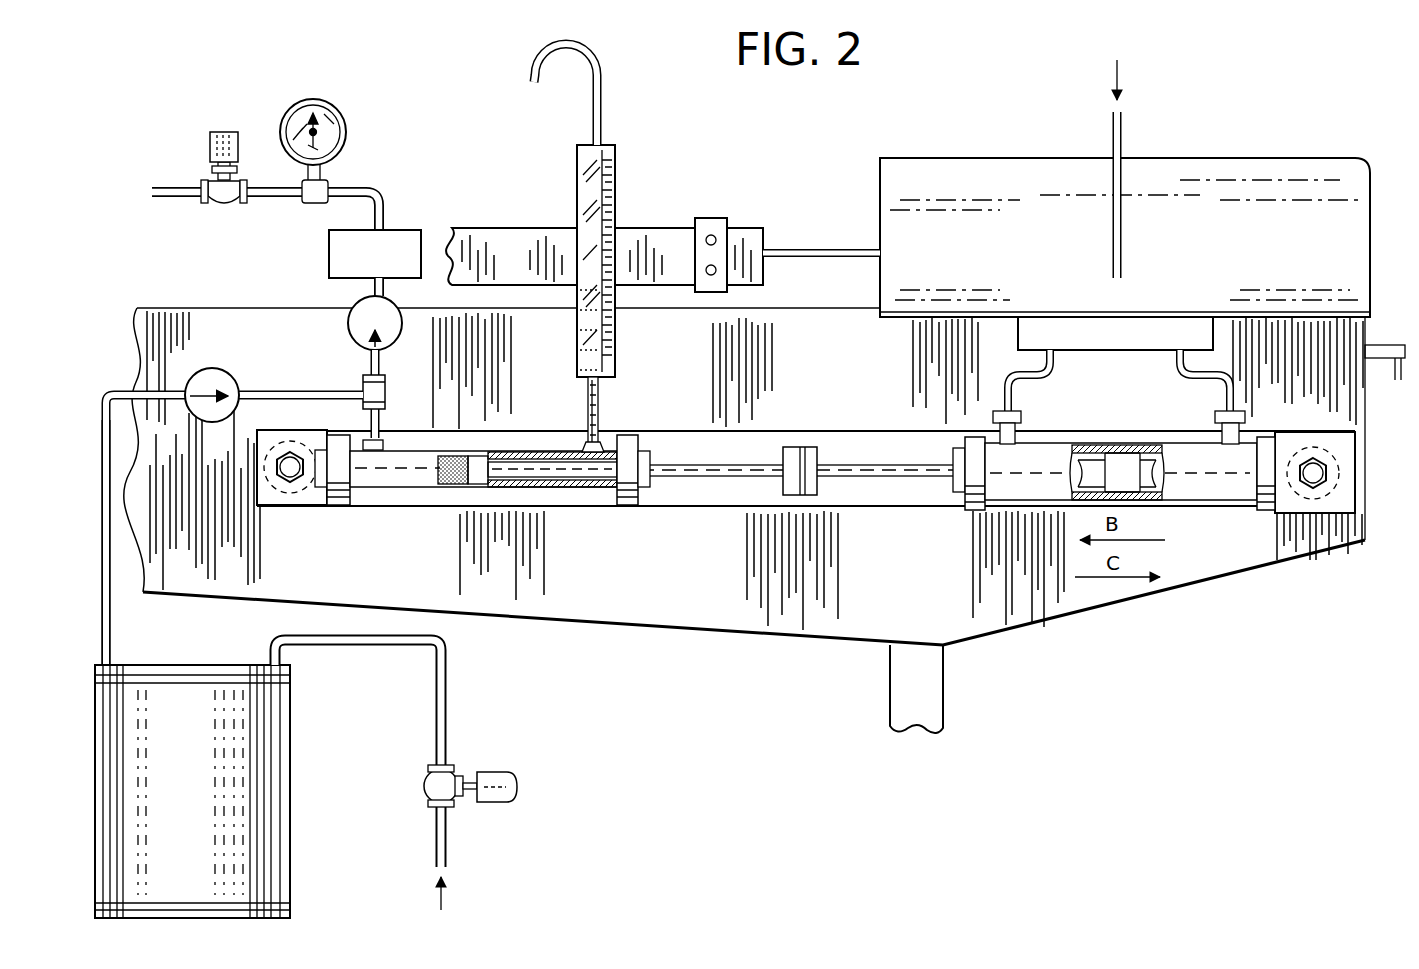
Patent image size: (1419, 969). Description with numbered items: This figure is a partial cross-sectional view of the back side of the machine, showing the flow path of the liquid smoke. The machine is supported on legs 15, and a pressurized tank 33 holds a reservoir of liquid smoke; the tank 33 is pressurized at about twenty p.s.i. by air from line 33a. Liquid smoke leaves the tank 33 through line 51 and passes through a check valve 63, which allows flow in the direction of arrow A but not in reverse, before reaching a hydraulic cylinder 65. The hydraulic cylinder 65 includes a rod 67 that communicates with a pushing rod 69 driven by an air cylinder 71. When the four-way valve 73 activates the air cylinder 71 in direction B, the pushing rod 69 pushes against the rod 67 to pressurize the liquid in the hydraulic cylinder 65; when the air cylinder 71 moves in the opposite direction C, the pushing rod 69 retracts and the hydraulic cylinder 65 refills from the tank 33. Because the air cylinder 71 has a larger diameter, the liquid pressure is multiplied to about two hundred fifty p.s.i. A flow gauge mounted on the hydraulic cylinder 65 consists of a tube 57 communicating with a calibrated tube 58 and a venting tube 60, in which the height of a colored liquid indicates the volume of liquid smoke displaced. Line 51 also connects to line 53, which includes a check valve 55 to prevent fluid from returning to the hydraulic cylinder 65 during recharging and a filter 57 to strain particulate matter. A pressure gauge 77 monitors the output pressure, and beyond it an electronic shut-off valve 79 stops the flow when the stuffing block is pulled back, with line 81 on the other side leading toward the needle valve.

The legs 15 is at (930, 700).
The pressurized tank 33 is at (277, 763).
The air line 33a is at (444, 705).
The line 51 is at (110, 600).
The line 53 is at (390, 362).
The check valve 55 is at (625, 200).
The filter 57 is at (408, 250).
The calibrated tube 58 is at (615, 330).
The venting tube 60 is at (590, 63).
The check valve 63 is at (208, 368).
The hydraulic cylinder 65 is at (428, 478).
The rod 67 is at (708, 480).
The pushing rod 69 is at (903, 480).
The air cylinder 71 is at (1198, 482).
The 4-way valve 73 is at (1185, 295).
The pressure gauge 77 is at (332, 118).
The electronic shut-off valve 79 is at (222, 140).
The line 81 is at (172, 188).